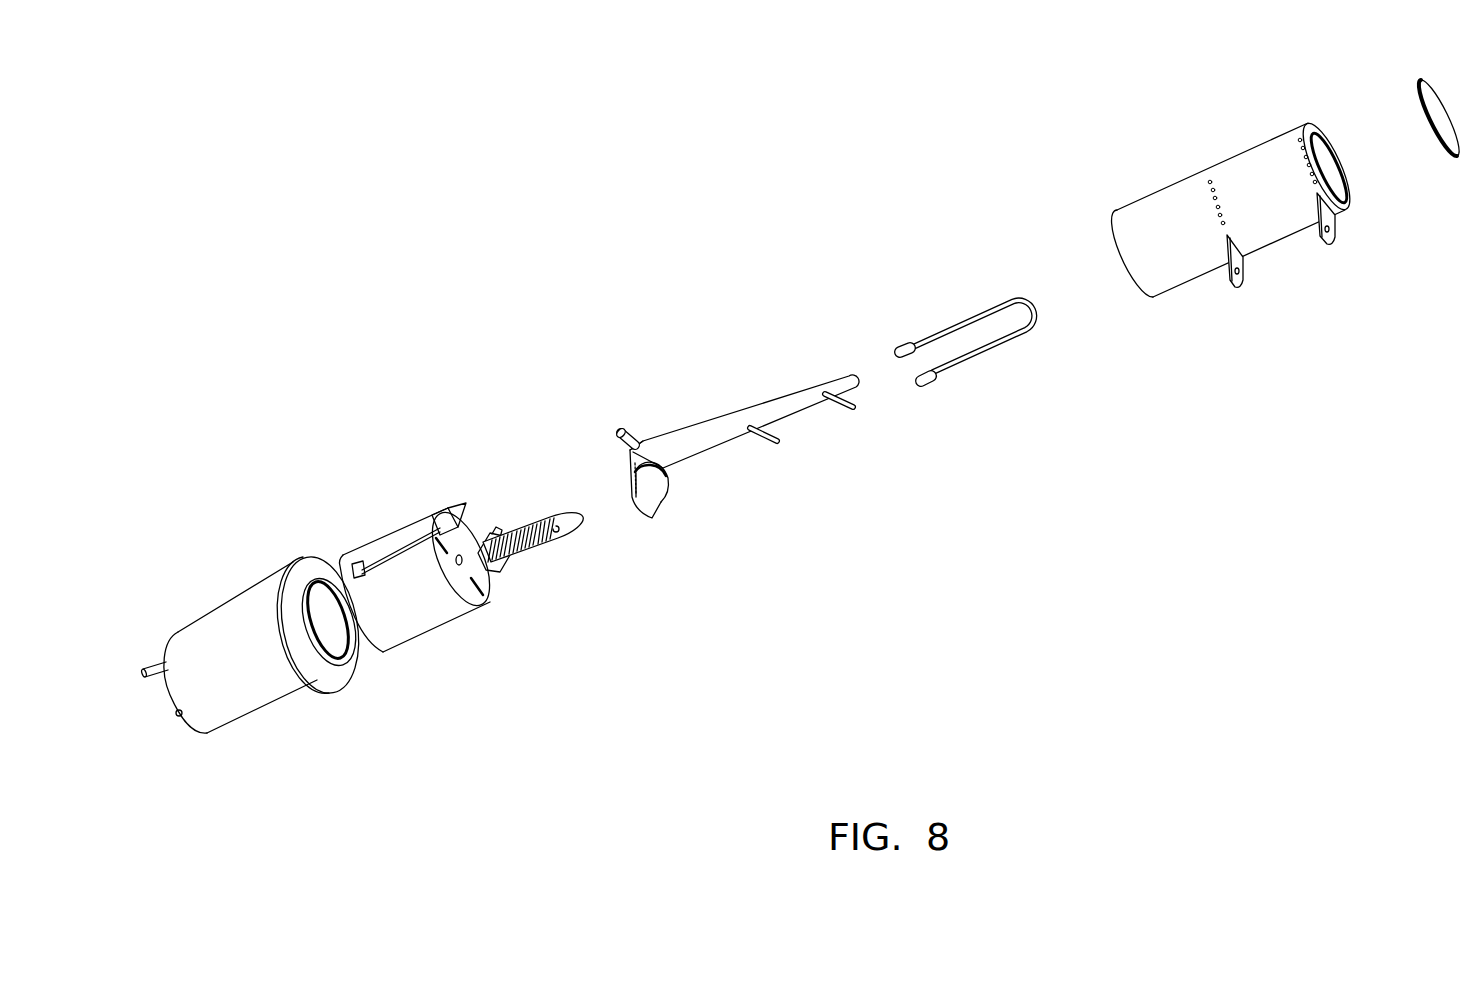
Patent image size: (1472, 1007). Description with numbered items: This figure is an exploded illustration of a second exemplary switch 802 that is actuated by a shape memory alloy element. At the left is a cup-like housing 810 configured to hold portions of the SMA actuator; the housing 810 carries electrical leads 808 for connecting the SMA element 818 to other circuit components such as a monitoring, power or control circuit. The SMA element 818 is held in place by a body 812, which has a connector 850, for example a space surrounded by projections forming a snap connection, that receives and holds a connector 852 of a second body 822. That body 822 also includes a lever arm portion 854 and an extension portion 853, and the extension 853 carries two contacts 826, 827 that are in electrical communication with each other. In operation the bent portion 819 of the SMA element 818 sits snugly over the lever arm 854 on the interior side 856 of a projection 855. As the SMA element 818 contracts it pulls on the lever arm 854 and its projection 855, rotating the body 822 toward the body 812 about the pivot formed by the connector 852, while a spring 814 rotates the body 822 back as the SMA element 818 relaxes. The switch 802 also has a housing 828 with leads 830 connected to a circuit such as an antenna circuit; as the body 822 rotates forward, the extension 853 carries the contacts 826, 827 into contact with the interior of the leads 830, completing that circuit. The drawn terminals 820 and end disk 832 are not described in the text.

The switch 802 is at (1117, 642).
The electrical leads 808 is at (143, 660).
The housing 810 is at (245, 587).
The body 812 is at (453, 637).
The spring 814 is at (547, 555).
The SMA element 818 is at (990, 363).
The bent portion 819 is at (1037, 300).
The heating element terminals 820 is at (930, 395).
The body 822 is at (710, 463).
The contact 826 is at (858, 417).
The contact 827 is at (777, 452).
The housing 828 is at (1140, 178).
The leads 830 is at (1332, 258).
The end cap 832 is at (1407, 80).
The connector 850 is at (487, 515).
The connector 852 is at (632, 415).
The extension portion 853 is at (822, 375).
The lever arm portion 854 is at (650, 525).
The projection 855 is at (673, 492).
The interior side 856 is at (662, 440).